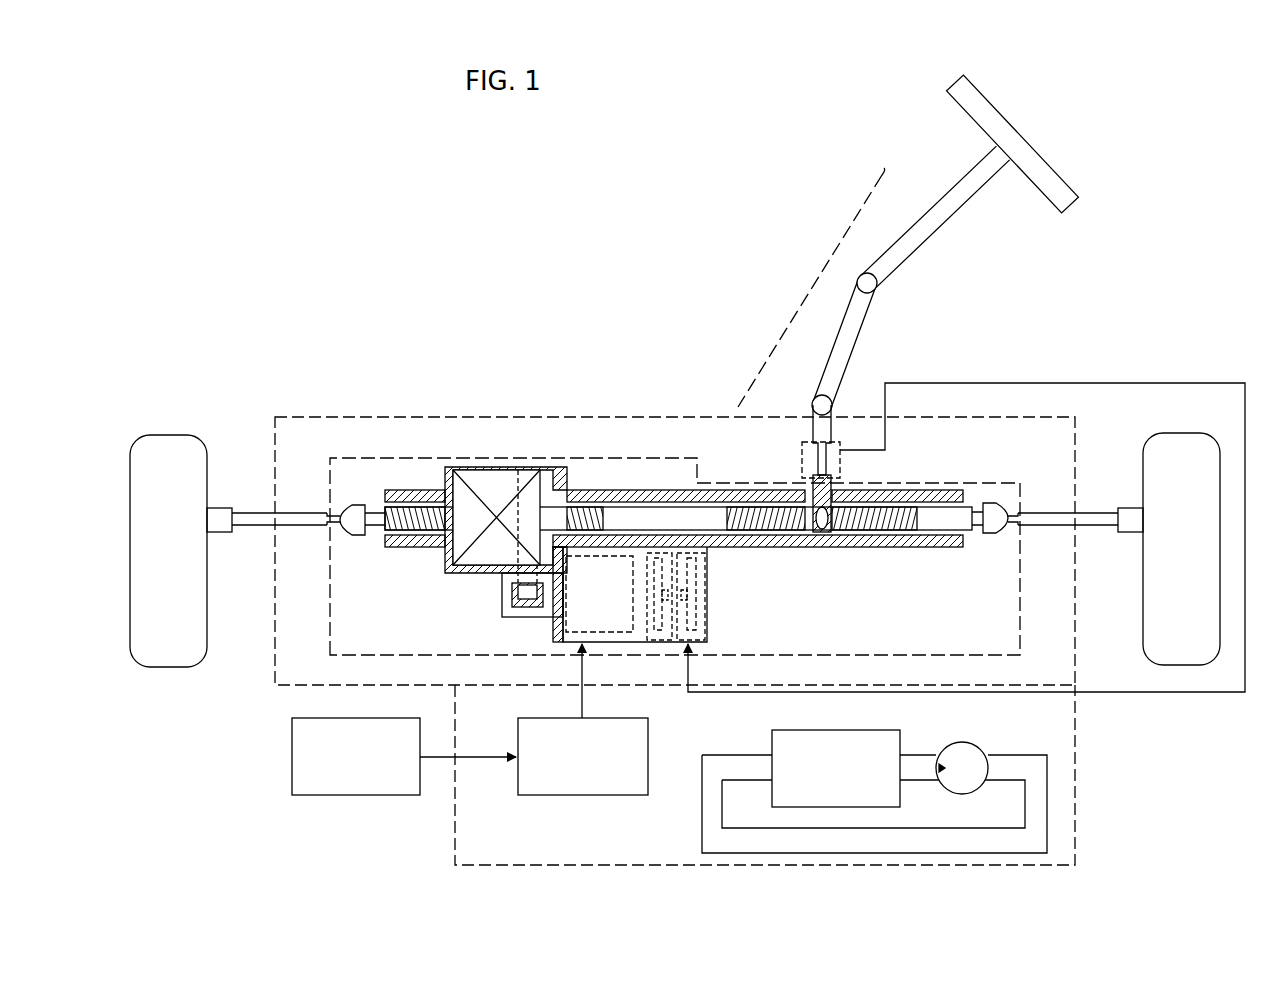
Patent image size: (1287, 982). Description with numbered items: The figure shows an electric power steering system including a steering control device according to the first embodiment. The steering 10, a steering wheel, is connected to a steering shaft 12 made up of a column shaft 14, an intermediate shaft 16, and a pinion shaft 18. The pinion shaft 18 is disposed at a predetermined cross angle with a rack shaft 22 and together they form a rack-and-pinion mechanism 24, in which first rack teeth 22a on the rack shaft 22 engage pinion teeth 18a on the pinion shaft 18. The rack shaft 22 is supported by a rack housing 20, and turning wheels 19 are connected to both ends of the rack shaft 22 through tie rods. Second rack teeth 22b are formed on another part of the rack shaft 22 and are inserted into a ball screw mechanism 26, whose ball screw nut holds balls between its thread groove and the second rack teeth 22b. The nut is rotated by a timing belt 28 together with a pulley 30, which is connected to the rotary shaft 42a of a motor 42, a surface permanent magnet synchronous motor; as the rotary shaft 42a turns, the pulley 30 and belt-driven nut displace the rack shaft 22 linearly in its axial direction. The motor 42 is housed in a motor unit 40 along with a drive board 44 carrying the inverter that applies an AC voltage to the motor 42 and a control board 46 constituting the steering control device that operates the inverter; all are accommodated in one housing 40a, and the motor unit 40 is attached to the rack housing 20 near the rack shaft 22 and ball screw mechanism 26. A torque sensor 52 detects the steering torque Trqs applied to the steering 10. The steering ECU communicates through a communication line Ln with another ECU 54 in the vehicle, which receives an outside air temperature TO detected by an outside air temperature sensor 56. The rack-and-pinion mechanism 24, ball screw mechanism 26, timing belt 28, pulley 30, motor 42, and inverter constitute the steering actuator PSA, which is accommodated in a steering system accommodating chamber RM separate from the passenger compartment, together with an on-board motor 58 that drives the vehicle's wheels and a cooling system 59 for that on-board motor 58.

The steering 10 is at (1037, 160).
The steering shaft 12 is at (806, 292).
The column shaft 14 is at (928, 210).
The intermediate shaft 16 is at (843, 335).
The pinion shaft 18 is at (813, 422).
The pinion teeth 18a is at (808, 492).
The turning wheels 19 is at (172, 445).
The rack housing 20 is at (893, 547).
The rack shaft 22 is at (678, 512).
The first rack teeth 22a is at (898, 507).
The second rack teeth 22b is at (585, 490).
The rack-and-pinion mechanism 24 is at (839, 560).
The ball screw mechanism 26 is at (480, 475).
The timing belt 28 is at (498, 583).
The pulley 30 is at (533, 600).
The motor unit 40 is at (690, 621).
The housing 40a is at (708, 560).
The motor 42 is at (598, 626).
The rotary shaft 42a is at (563, 590).
The drive board 44 is at (700, 628).
The control board 46 is at (660, 645).
The torque sensor 52 is at (835, 440).
The other ECU 54 is at (608, 718).
The outside air temperature sensor 56 is at (380, 718).
The on-board motor 58 is at (860, 730).
The cooling system 59 is at (1014, 743).
The steering actuator PSA is at (950, 483).
The steering system accommodating chamber RM is at (1077, 760).
The steering torque Trqs is at (966, 538).
The outside air temperature TO is at (468, 743).
The communication line Ln is at (582, 685).